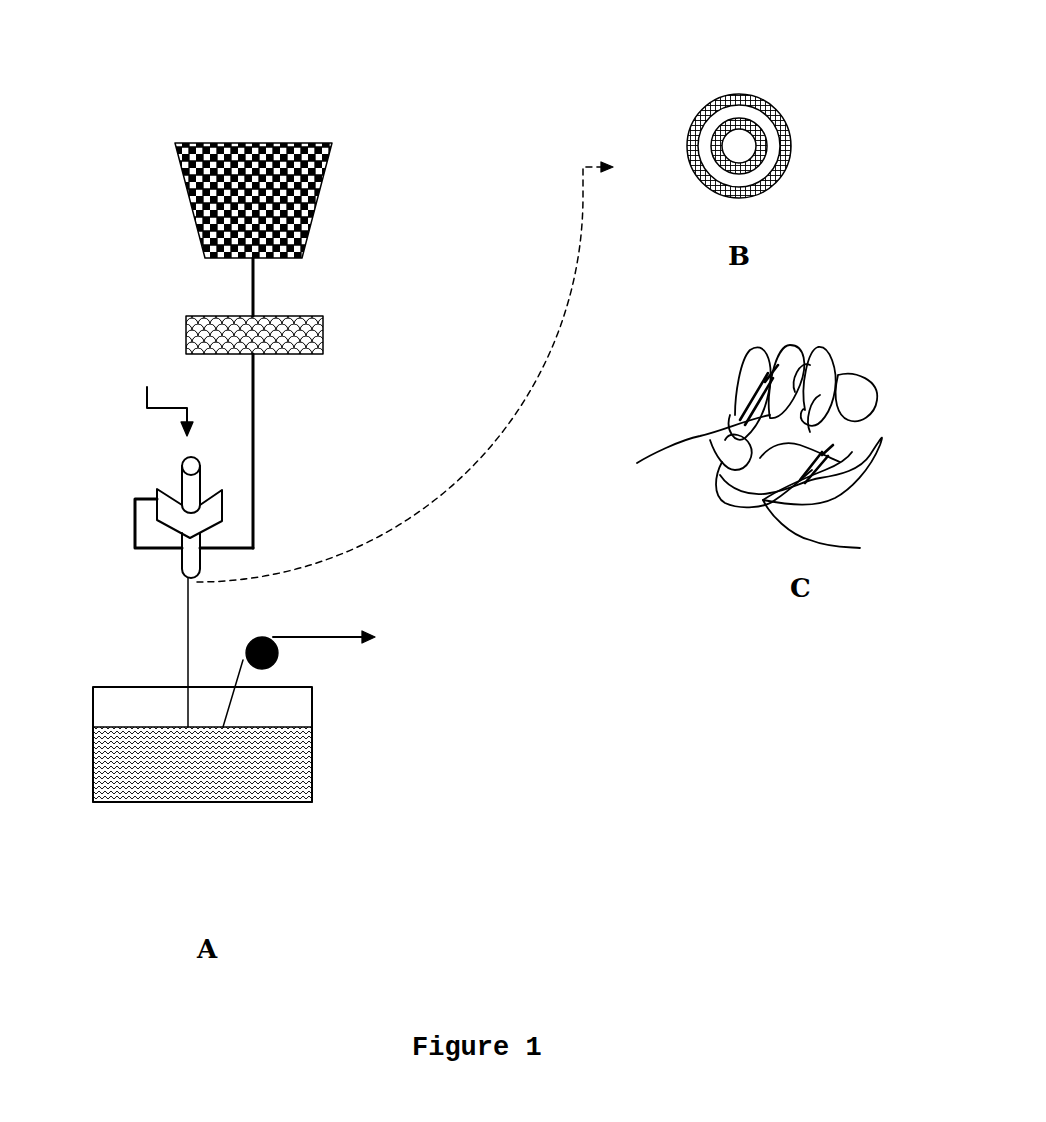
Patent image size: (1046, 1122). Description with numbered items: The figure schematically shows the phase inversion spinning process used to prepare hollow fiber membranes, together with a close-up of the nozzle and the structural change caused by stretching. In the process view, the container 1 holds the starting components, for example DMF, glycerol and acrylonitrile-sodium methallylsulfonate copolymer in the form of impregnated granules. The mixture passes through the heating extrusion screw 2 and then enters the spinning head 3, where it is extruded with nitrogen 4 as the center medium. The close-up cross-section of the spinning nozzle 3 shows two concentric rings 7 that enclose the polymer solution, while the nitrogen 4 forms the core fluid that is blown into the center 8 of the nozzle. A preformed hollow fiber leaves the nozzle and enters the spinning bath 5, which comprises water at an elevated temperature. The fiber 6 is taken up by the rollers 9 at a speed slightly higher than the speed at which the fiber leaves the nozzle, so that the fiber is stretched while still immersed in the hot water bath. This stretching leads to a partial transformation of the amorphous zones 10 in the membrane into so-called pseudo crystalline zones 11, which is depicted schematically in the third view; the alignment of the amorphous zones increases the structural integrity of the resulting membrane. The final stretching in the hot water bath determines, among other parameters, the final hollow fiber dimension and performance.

In FIG. 1A, the container 1 is at (365, 60).
In FIG. 1A, the heating extrusion screw 2 is at (377, 270).
In FIG. 1A, the spinning head 3 is at (300, 447).
In FIG. 1A, the nitrogen 4 is at (70, 263).
In FIG. 1A, the spinning bath 5 is at (307, 832).
In FIG. 1A, the fiber 6 is at (373, 745).
In FIG. 1B, the concentric rings 7 is at (835, 117).
In FIG. 1B, the center 8 is at (835, 182).
In FIG. 1A, the rollers 9 is at (390, 660).
In FIG. 1C, the amorphous zones 10 is at (895, 335).
In FIG. 1C, the pseudo crystalline zones 11 is at (886, 500).